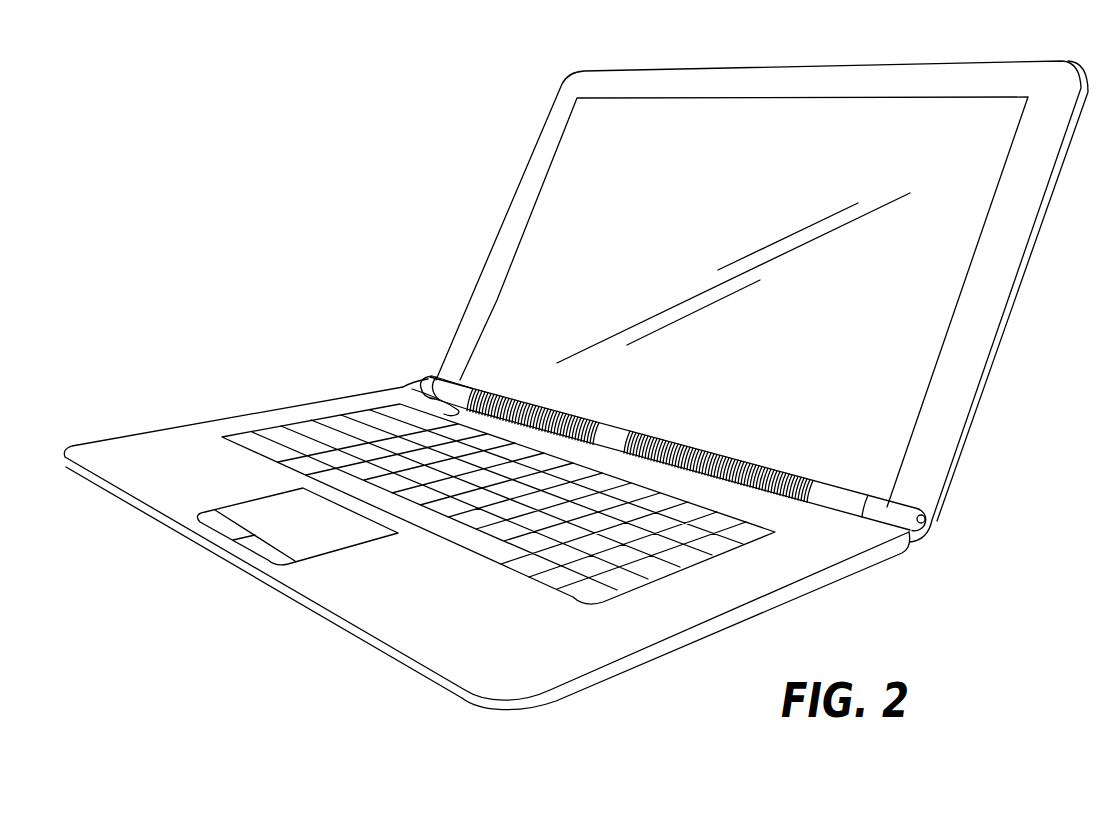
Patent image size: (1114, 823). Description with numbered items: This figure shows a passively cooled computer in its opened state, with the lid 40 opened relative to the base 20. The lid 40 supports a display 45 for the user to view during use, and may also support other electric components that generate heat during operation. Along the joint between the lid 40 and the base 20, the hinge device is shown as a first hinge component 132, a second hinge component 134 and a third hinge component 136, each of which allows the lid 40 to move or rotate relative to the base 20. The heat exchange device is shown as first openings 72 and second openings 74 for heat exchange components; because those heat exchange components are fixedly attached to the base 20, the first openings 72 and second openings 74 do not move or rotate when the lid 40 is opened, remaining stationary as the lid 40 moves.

The base 20 is at (604, 682).
The lid 40 is at (1042, 214).
The display 45 is at (802, 130).
The first openings 72 is at (782, 477).
The second openings 74 is at (402, 391).
The first hinge component 132 is at (837, 500).
The second hinge component 134 is at (614, 434).
The third hinge component 136 is at (448, 378).